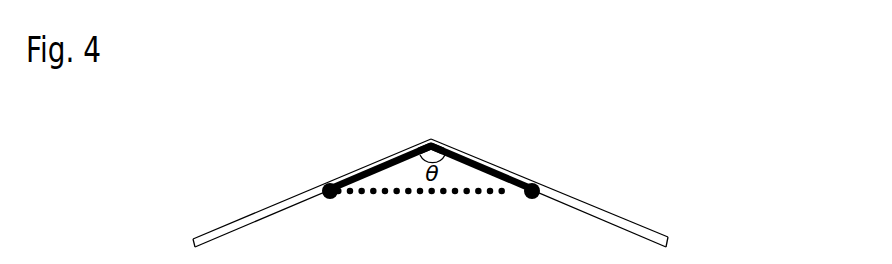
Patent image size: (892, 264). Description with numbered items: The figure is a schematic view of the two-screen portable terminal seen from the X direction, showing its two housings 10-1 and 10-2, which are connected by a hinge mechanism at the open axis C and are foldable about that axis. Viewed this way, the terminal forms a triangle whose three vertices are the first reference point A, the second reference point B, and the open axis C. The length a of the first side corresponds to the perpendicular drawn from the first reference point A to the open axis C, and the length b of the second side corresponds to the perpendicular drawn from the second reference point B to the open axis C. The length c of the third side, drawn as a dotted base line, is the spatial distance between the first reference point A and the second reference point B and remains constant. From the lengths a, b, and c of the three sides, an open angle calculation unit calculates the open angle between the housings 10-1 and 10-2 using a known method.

The housing 10-1 is at (620, 226).
The housing 10-2 is at (243, 223).
The first reference point A is at (538, 204).
The second reference point B is at (323, 204).
The open axis C is at (431, 133).
The length of the first side a is at (441, 145).
The length of the second side b is at (422, 145).
The length of the third side c is at (336, 197).